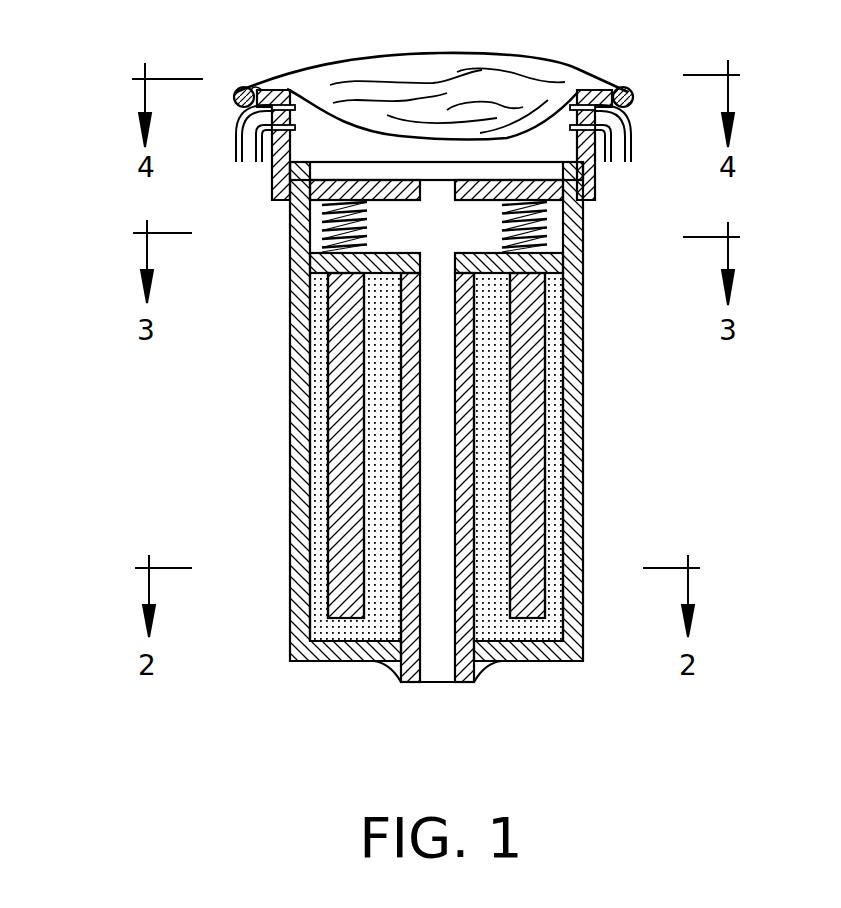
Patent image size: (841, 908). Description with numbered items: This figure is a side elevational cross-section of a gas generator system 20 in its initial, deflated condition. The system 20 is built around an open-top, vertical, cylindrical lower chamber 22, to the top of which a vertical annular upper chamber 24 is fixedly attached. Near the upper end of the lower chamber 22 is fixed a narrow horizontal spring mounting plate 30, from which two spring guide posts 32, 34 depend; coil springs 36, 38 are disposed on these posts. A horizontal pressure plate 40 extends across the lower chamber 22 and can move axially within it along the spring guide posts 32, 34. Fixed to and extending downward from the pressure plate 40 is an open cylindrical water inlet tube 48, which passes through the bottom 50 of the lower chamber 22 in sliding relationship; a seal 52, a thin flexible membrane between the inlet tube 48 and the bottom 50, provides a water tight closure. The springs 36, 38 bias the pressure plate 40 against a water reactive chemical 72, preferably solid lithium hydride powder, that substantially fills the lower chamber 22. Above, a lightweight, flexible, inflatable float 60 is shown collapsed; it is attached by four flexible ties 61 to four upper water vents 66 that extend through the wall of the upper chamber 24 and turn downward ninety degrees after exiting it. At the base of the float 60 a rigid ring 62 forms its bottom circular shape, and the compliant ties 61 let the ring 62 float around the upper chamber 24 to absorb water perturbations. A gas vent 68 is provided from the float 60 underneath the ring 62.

The gas generator system 20 is at (152, 434).
The lower chamber 22 is at (297, 480).
The upper chamber 24 is at (280, 178).
The spring mounting plate 30 is at (468, 187).
The spring guide post 32 is at (340, 405).
The spring guide post 34 is at (528, 400).
The coil spring 36 is at (325, 225).
The coil spring 38 is at (545, 218).
The pressure plate 40 is at (548, 263).
The water inlet tube 48 is at (411, 676).
The bottom 50 is at (338, 652).
The seal 52 is at (478, 664).
The inflatable float 60 is at (400, 70).
The flexible tie 61 is at (263, 91).
The rigid ring 62 is at (238, 89).
The upper water vent 66 is at (237, 133).
The gas vent 68 is at (222, 115).
The water reactive chemical 72 is at (375, 580).